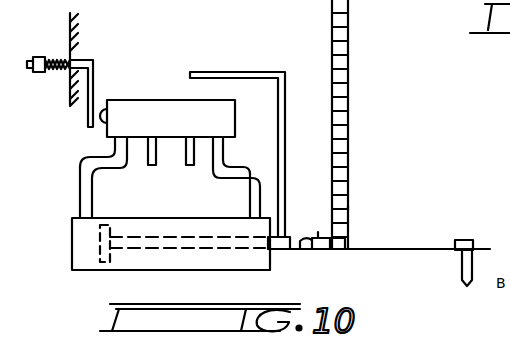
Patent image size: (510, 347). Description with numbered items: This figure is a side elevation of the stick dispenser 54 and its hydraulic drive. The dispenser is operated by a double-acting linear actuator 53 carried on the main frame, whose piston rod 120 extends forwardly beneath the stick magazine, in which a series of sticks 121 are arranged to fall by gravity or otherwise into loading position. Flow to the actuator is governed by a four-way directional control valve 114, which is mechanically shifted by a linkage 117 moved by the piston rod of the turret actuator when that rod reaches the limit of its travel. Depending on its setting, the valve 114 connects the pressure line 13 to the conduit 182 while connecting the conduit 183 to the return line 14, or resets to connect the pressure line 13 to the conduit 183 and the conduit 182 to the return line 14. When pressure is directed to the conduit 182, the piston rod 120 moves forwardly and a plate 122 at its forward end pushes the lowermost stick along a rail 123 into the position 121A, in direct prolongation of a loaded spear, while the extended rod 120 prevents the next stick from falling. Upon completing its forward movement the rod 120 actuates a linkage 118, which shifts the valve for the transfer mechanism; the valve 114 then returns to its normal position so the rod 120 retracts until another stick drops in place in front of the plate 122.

The linkage 117 is at (85, 58).
The valve 114 is at (140, 100).
The linkage 118 is at (236, 72).
The stick dispenser 54 is at (352, 82).
The conduit 182 is at (100, 172).
The conduit 183 is at (245, 180).
The return line 14 is at (151, 166).
The pressure line 13 is at (190, 166).
The double-acting linear actuator 53 is at (176, 245).
The rail 123 is at (398, 250).
The piston rod 120 is at (288, 251).
The plate 122 is at (318, 238).
The sticks 121 is at (348, 206).
The stick position 121A is at (478, 218).